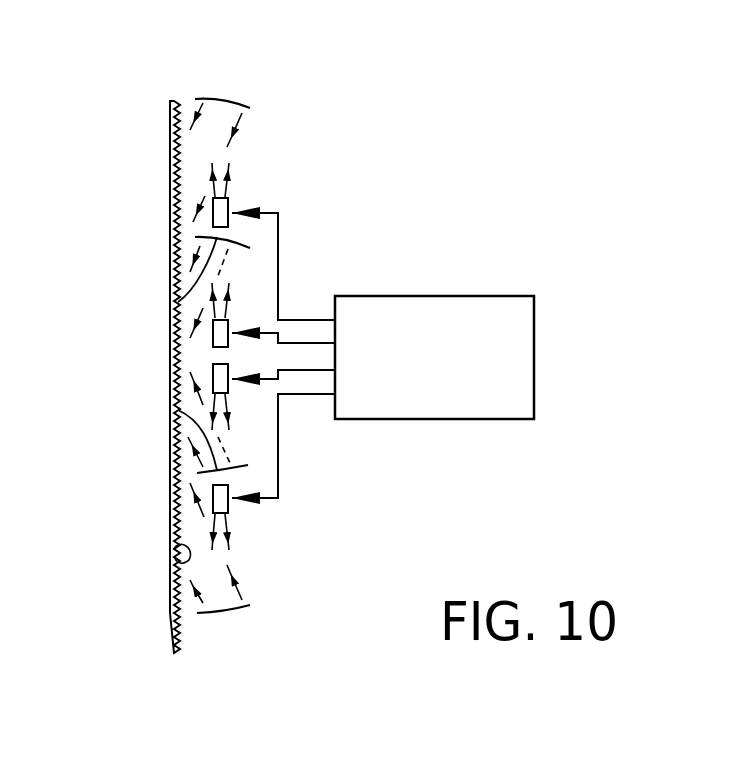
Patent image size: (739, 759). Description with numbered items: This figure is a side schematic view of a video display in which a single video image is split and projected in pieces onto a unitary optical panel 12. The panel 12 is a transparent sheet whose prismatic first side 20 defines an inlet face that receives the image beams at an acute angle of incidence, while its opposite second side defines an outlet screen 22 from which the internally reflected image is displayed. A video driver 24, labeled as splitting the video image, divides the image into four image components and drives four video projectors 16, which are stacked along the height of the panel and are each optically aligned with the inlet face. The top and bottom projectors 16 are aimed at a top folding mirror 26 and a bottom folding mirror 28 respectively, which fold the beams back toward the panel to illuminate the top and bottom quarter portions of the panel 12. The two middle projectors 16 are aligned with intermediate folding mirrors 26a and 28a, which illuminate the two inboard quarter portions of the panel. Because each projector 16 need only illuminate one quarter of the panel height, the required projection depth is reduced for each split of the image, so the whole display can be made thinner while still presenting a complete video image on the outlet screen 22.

The panel 12 is at (166, 154).
The video projector 16 is at (230, 204).
The prismatic first side 20 is at (170, 549).
The outlet screen 22 is at (170, 503).
The video driver 24 is at (474, 296).
The top folding mirror 26 is at (221, 100).
The intermediate folding mirror 26a is at (173, 303).
The bottom folding mirror 28 is at (226, 613).
The intermediate folding mirror 28a is at (173, 410).